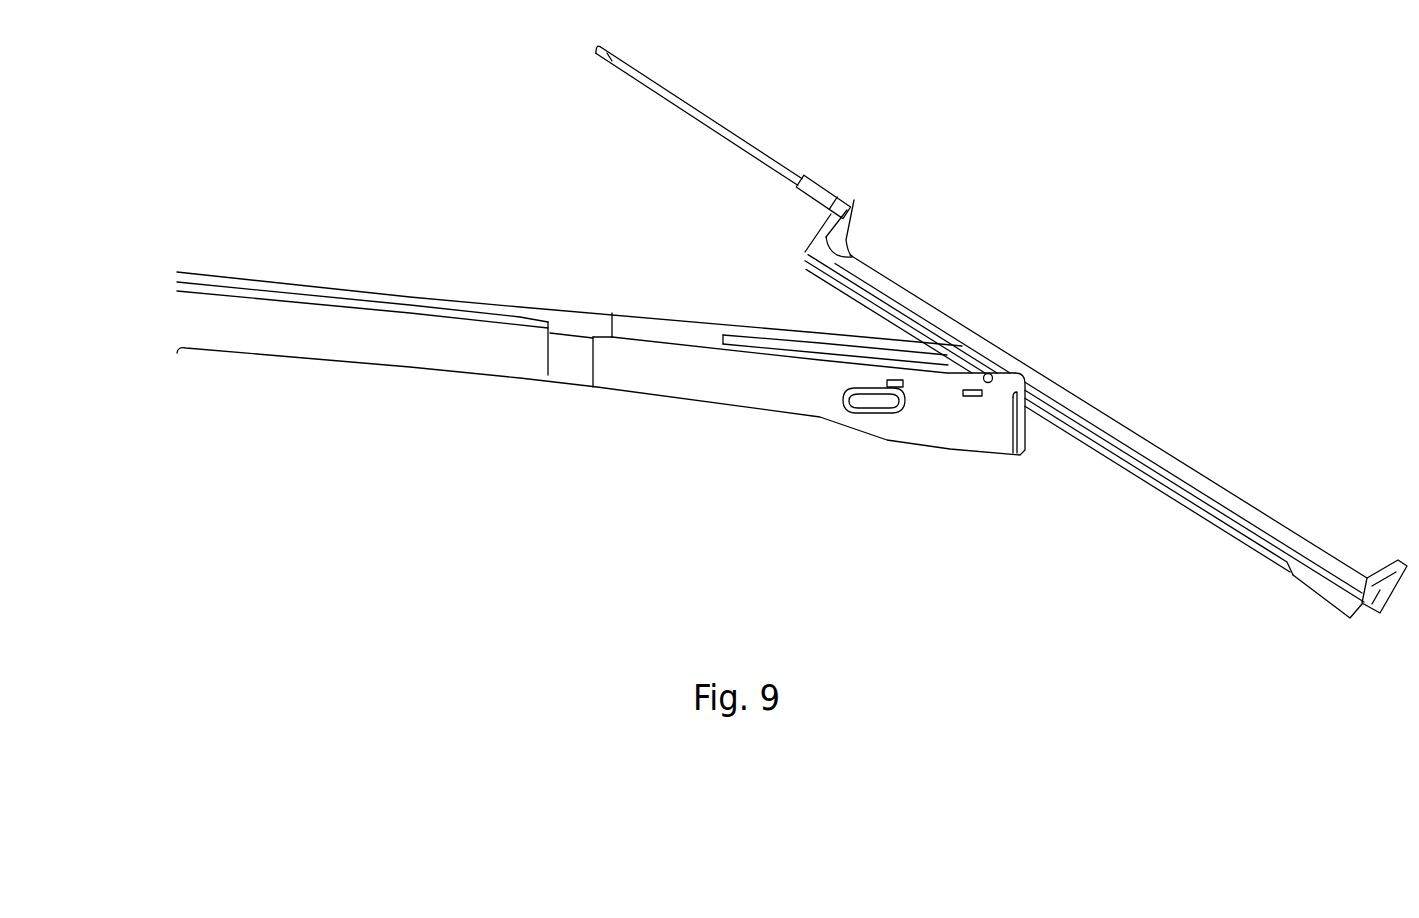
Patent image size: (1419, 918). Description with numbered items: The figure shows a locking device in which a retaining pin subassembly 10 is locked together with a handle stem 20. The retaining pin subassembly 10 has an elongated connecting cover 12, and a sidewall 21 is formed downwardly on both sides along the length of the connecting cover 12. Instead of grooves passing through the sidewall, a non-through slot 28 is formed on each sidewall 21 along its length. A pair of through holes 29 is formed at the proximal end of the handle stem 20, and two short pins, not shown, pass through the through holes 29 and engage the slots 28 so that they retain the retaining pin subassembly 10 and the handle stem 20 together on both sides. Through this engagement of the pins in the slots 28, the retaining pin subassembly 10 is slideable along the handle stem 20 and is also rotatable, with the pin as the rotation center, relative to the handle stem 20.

The retaining pin subassembly 10 is at (867, 122).
The connecting cover 12 is at (1157, 457).
The handle stem 20 is at (657, 378).
The sidewall 21 is at (1323, 578).
The non-through slot 28 is at (1213, 512).
The through hole 29 is at (992, 381).